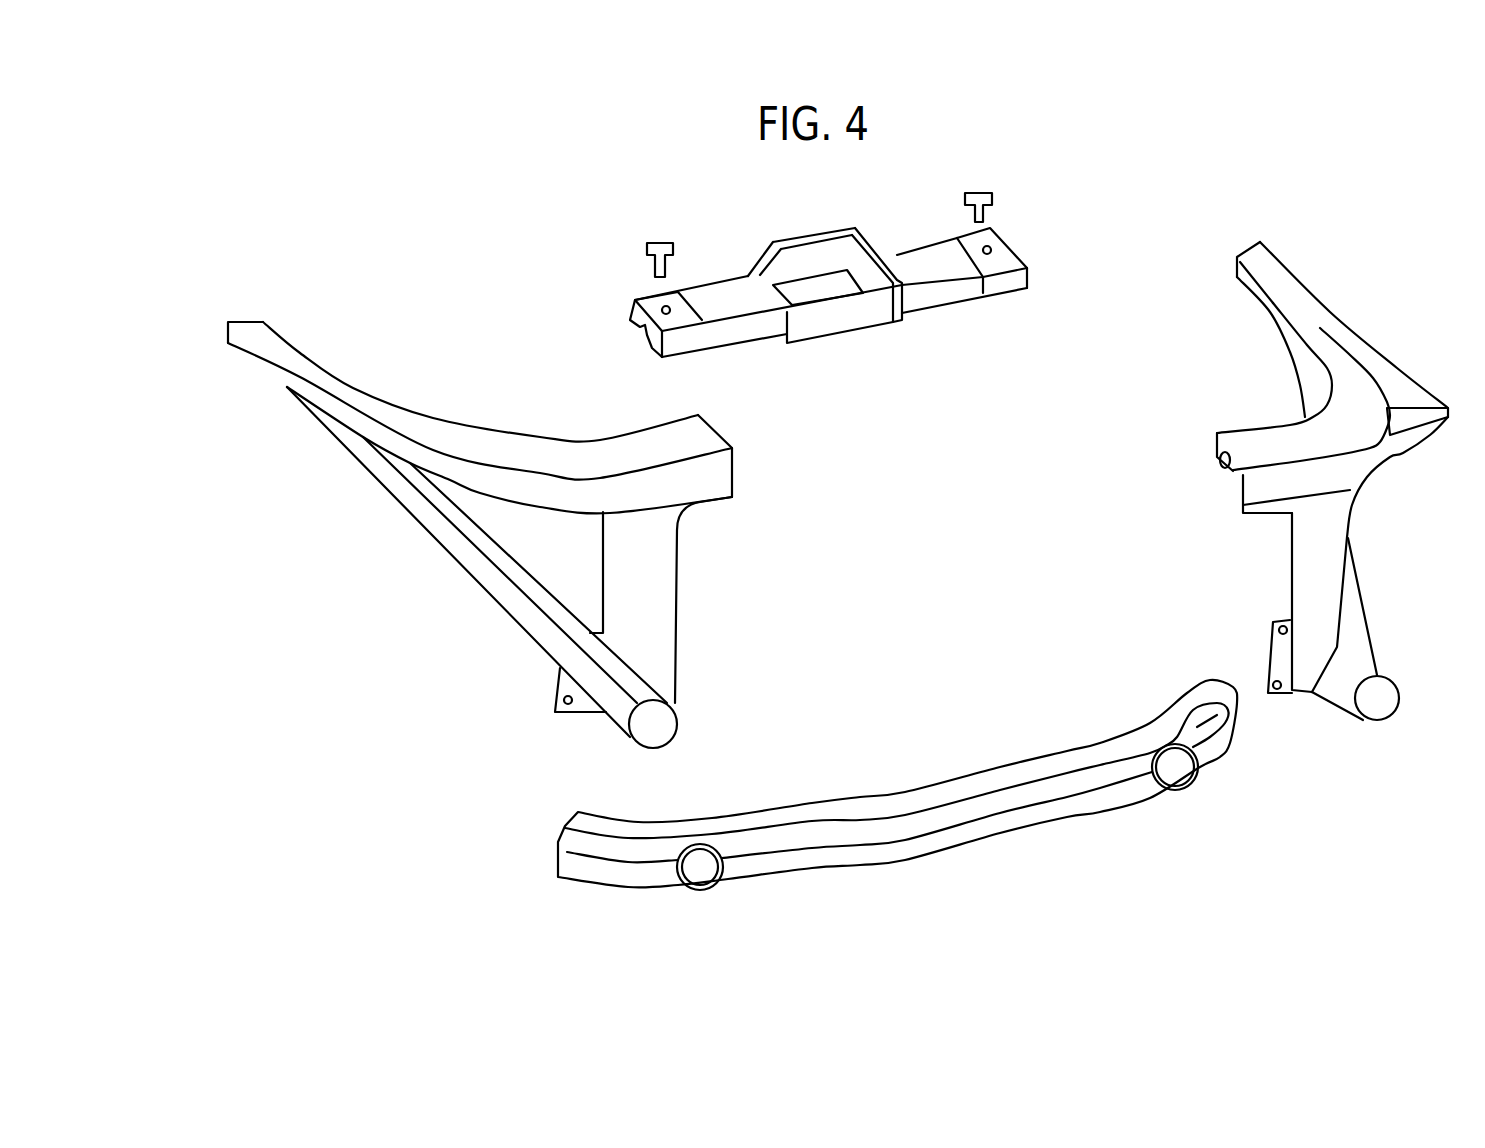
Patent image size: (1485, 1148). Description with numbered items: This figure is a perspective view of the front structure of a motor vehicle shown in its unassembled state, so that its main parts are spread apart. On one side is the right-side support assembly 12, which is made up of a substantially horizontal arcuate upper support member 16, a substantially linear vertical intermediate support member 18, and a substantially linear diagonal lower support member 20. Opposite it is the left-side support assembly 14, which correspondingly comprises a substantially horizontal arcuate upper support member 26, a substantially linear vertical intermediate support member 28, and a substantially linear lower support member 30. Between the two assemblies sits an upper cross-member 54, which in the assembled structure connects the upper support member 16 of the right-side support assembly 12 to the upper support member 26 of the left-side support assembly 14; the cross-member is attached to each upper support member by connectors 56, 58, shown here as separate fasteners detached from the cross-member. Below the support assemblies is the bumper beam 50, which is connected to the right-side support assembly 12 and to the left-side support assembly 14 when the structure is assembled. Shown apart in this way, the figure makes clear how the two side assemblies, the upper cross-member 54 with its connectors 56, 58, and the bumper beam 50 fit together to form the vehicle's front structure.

The right-side support assembly 12 is at (325, 497).
The left-side support assembly 14 is at (1326, 274).
The upper support member 16 is at (437, 412).
The intermediate support member 18 is at (667, 574).
The lower support member 20 is at (457, 558).
The upper support member 26 is at (1272, 305).
The intermediate support member 28 is at (1291, 593).
The lower support member 30 is at (1364, 600).
The bumper beam 50 is at (847, 868).
The upper cross-member 54 is at (745, 276).
The connector 56 is at (662, 243).
The connector 58 is at (980, 193).